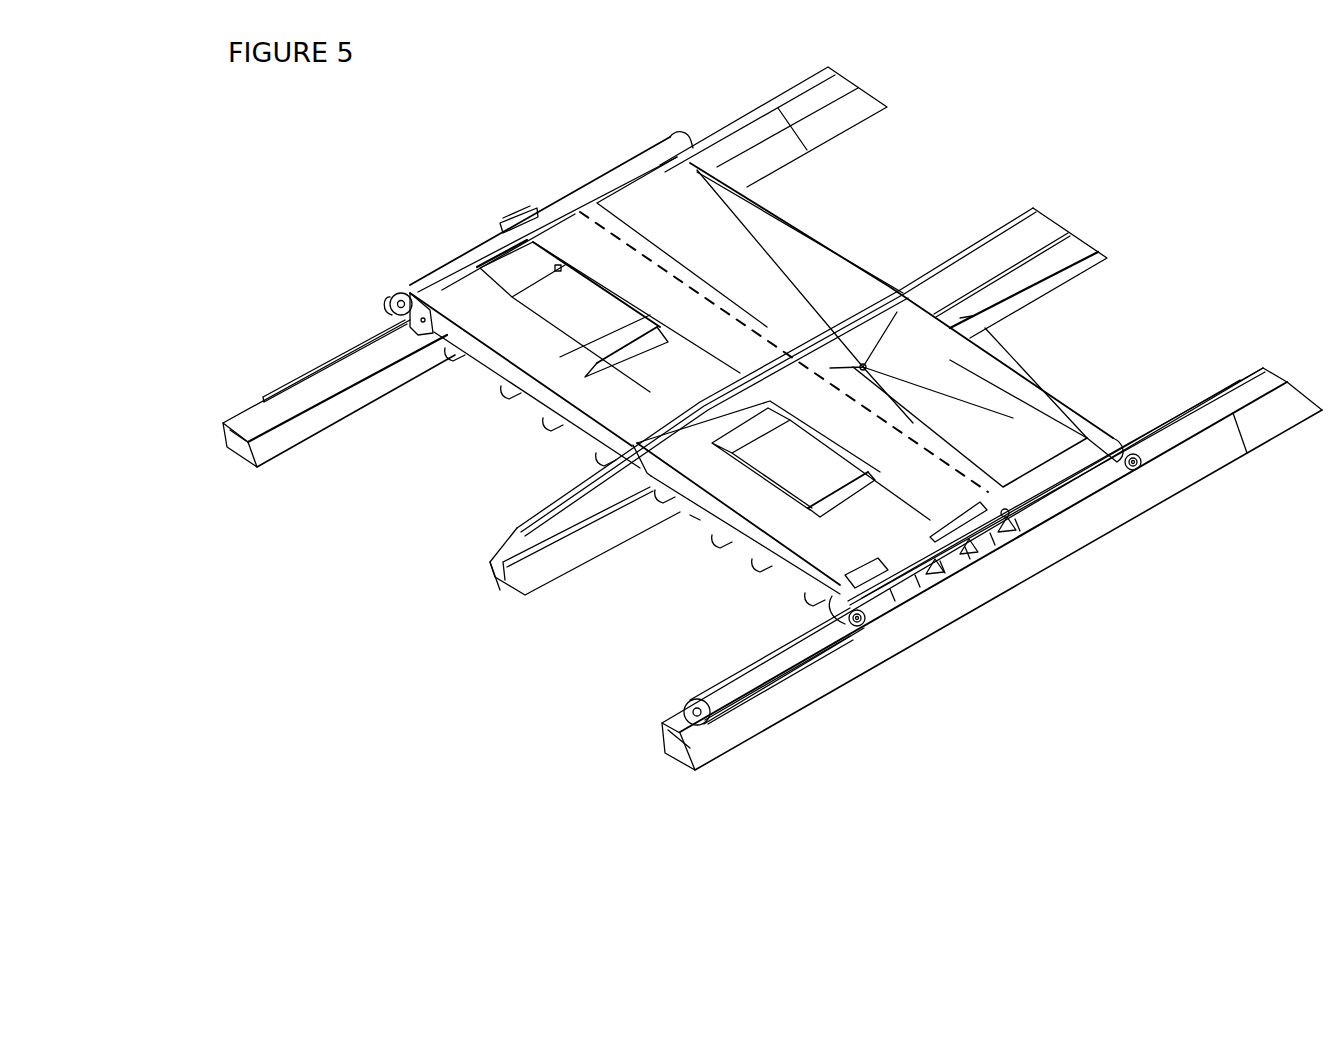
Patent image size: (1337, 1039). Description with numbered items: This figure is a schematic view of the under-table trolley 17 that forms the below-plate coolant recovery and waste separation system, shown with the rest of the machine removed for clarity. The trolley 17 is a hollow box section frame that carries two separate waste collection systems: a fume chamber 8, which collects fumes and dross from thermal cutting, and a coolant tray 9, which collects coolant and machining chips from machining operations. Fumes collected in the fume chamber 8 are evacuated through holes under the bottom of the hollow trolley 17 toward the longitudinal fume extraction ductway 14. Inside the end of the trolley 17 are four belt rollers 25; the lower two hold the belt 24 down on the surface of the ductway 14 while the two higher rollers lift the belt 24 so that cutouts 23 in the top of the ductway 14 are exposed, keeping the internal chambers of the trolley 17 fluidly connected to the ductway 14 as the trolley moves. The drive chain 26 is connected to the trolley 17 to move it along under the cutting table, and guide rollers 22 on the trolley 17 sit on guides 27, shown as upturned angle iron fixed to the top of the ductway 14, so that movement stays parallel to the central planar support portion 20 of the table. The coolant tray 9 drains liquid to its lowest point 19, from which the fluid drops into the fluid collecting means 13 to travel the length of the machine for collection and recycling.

The fume chamber 8 is at (595, 317).
The coolant tray 9 is at (727, 250).
The fluid collecting means 13 is at (518, 584).
The longitudinal fume extraction ductway 14 is at (243, 452).
The trolley 17 is at (520, 327).
The lowest point 19 is at (865, 366).
The central planar support portion 20 is at (1032, 233).
The guide rollers 22 is at (397, 302).
The cutouts 23 is at (925, 578).
The belt 24 is at (268, 417).
The belt rollers 25 is at (697, 519).
The drive chain 26 is at (1183, 413).
The guide 27 is at (338, 353).